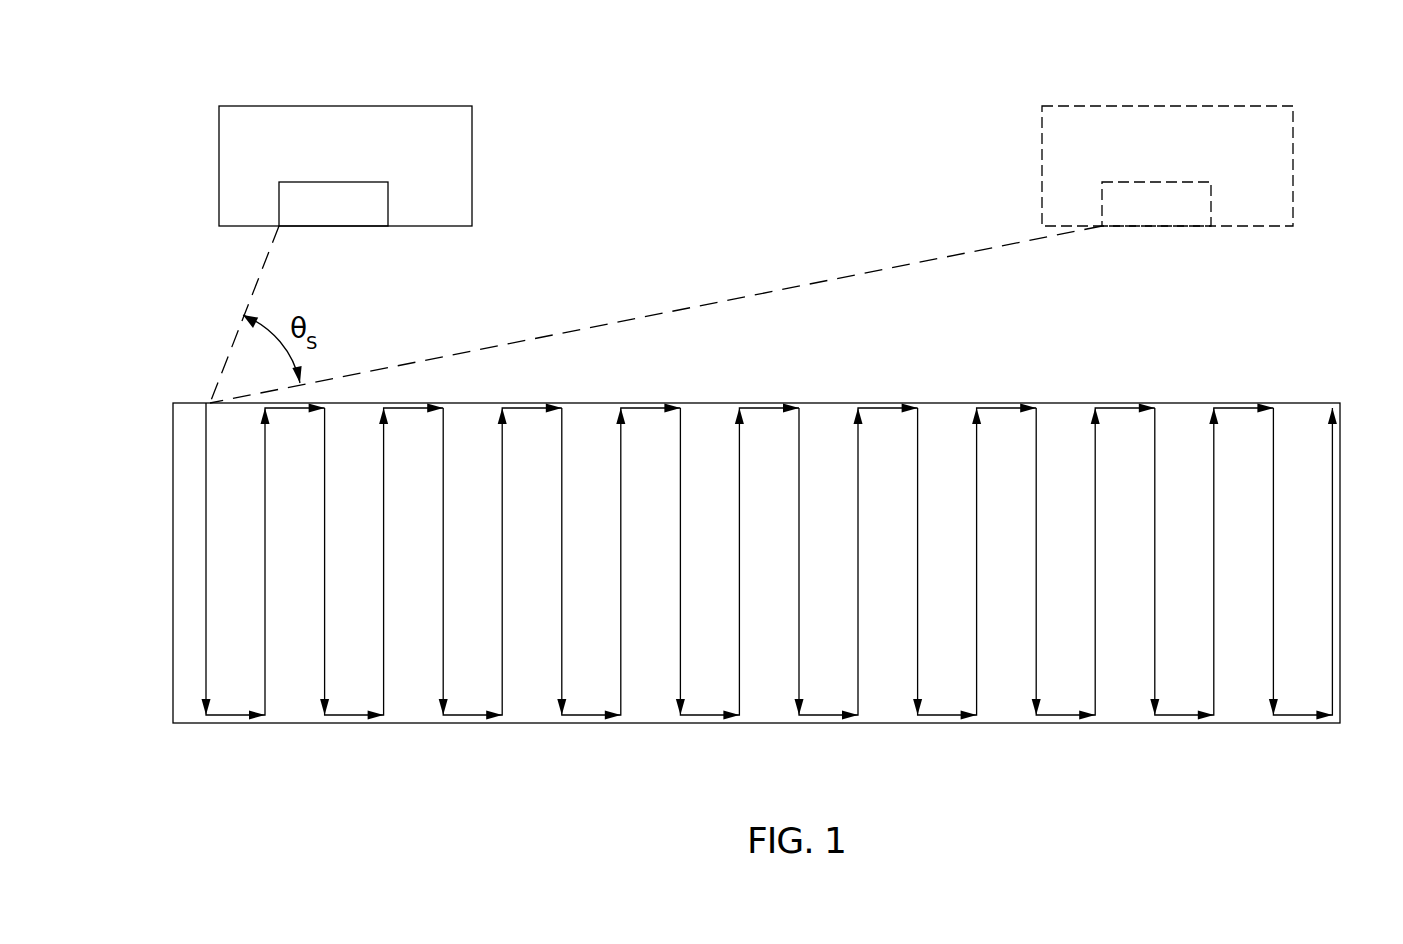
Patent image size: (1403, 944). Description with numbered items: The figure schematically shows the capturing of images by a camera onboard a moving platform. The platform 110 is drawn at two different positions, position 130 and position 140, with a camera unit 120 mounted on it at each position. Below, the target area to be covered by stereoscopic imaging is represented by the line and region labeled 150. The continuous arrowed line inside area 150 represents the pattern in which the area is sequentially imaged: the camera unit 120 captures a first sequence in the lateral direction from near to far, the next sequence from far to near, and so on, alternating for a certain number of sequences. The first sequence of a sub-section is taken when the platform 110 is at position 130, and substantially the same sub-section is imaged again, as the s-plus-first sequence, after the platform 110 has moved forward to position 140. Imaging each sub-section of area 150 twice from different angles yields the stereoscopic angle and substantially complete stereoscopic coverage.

The platform 110 is at (250, 148).
The camera unit 120 is at (318, 203).
The position 130 is at (390, 105).
The position 140 is at (1212, 105).
The target area 150 is at (1238, 720).